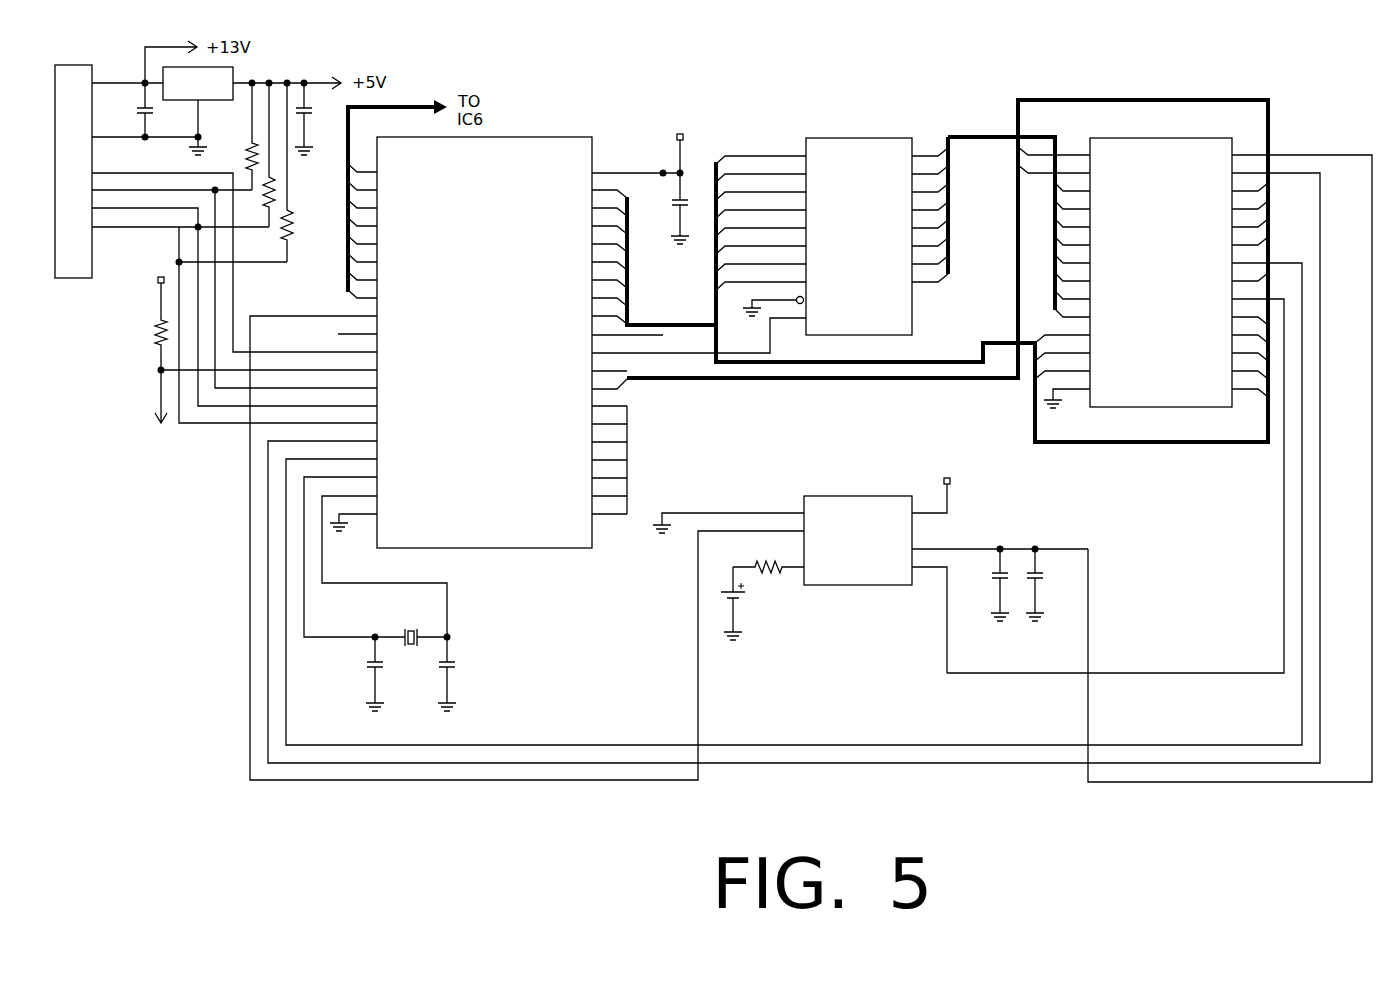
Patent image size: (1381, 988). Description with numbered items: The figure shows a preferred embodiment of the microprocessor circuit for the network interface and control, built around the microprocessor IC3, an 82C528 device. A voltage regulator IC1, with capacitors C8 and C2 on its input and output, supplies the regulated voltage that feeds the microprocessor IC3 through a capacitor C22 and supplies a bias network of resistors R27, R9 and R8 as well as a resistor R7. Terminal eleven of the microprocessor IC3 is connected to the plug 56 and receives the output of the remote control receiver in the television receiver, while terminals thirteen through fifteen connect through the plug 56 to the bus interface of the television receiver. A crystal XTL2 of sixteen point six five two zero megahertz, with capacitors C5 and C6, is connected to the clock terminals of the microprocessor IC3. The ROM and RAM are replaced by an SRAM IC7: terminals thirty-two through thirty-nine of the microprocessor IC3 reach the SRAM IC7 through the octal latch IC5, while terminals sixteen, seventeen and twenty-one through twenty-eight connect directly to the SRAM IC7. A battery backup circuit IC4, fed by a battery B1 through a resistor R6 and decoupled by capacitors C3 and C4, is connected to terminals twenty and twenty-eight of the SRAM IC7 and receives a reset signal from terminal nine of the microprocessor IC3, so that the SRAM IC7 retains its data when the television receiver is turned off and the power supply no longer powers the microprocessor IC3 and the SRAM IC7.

The plug 56 is at (77, 278).
The voltage regulator IC1 is at (233, 70).
The capacitor C8 is at (160, 110).
The capacitor C2 is at (317, 119).
The resistor R27 is at (237, 136).
The resistor R9 is at (278, 193).
The resistor R8 is at (284, 233).
The resistor R7 is at (150, 364).
The microprocessor IC3 is at (785, 458).
The capacitor C22 is at (689, 198).
The crystal XTL2 is at (411, 626).
The capacitor C5 is at (363, 674).
The capacitor C6 is at (459, 674).
The octal latch IC5 is at (860, 138).
The SRAM IC7 is at (1159, 460).
The battery backup circuit IC4 is at (870, 561).
The resistor R6 is at (768, 559).
The battery B1 is at (747, 603).
The capacitor C3 is at (988, 584).
The capacitor C4 is at (1048, 584).